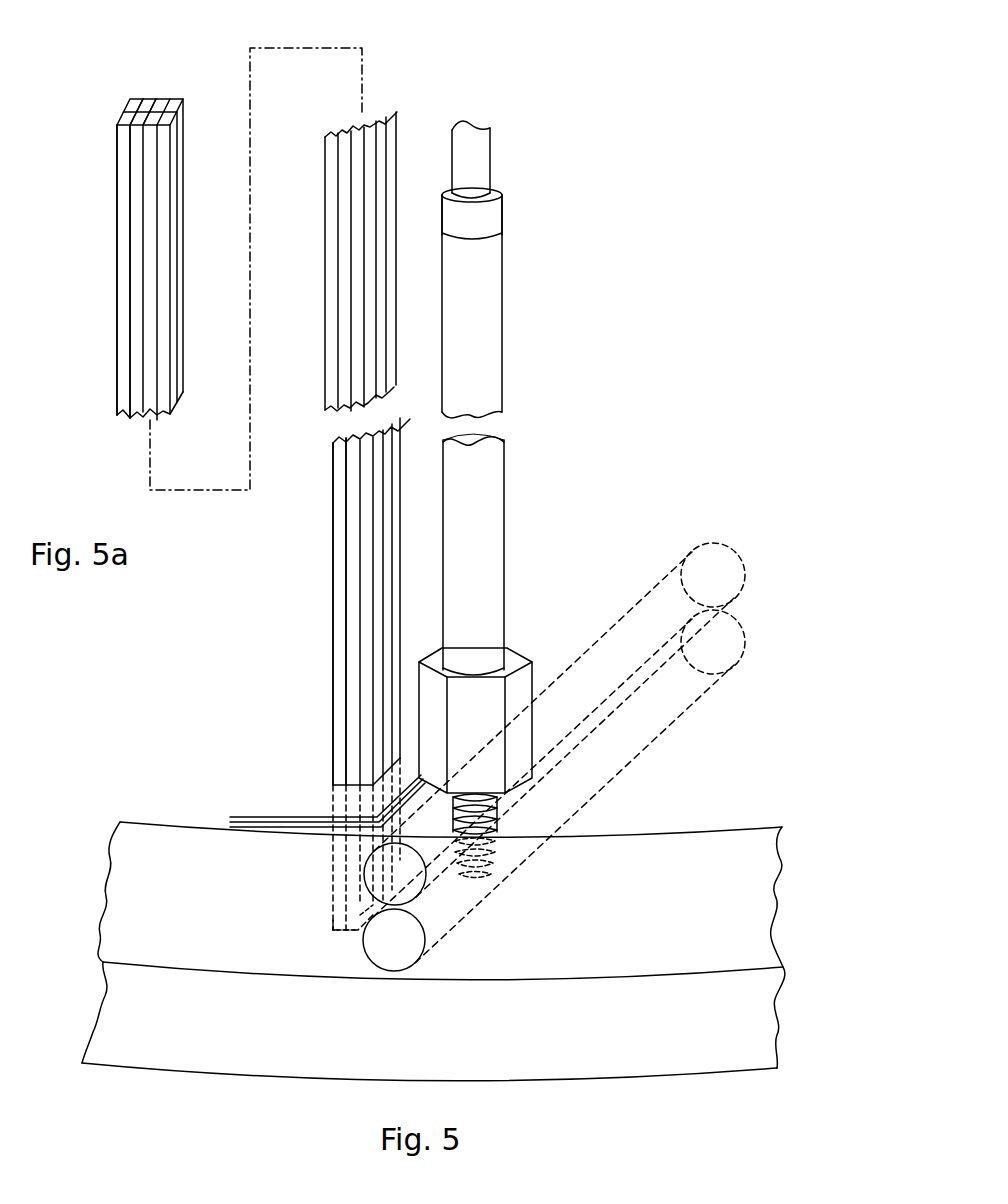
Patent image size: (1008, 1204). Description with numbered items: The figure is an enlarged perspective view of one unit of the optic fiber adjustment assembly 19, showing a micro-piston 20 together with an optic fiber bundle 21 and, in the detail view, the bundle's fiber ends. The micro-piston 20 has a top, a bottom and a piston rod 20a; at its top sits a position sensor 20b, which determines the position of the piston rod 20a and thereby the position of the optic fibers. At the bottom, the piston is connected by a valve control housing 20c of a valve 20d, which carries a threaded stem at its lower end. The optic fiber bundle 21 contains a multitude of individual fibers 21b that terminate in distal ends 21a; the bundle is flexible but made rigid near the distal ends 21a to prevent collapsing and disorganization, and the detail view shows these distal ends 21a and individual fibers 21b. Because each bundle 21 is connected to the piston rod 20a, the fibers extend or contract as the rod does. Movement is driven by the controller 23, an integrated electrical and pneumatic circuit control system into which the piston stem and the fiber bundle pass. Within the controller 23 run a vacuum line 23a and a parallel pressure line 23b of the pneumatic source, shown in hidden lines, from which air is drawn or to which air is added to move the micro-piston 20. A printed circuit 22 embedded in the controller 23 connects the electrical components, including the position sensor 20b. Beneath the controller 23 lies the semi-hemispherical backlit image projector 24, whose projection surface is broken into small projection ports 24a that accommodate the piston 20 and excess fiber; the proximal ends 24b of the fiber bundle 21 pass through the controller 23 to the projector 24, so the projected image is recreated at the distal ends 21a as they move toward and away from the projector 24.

In FIG. 5, the optic fiber adjustment assembly 19 is at (570, 446).
In FIG. 5, the micro-piston 20 is at (503, 326).
In FIG. 5, the piston rod 20a is at (492, 160).
In FIG. 5, the position sensor 20b is at (502, 210).
In FIG. 5, the valve control housing 20c is at (525, 653).
In FIG. 5, the valve 20d is at (485, 832).
In FIG. 5A, the optic fiber bundle 21 is at (117, 160).
In FIG. 5, the optic fiber bundle 21 is at (333, 743).
In FIG. 5A, the distal ends 21a is at (158, 100).
In FIG. 5A, the individual fibers 21b is at (125, 238).
In FIG. 5, the individual fibers 21b is at (338, 670).
In FIG. 5, the printed circuit 22 is at (290, 815).
In FIG. 5, the controller 23 is at (622, 922).
In FIG. 5, the vacuum line 23a is at (720, 568).
In FIG. 5, the pressure line 23b is at (720, 643).
In FIG. 5, the backlit image projector 24 is at (622, 1044).
In FIG. 5, the projection ports 24a is at (345, 922).
In FIG. 5, the proximal ends 24b is at (370, 908).